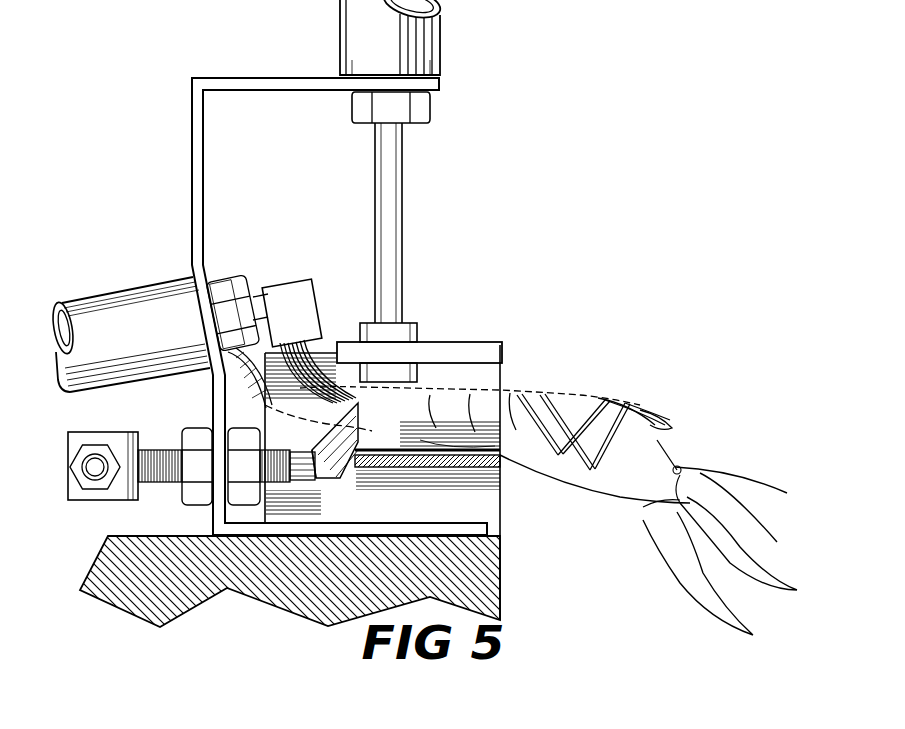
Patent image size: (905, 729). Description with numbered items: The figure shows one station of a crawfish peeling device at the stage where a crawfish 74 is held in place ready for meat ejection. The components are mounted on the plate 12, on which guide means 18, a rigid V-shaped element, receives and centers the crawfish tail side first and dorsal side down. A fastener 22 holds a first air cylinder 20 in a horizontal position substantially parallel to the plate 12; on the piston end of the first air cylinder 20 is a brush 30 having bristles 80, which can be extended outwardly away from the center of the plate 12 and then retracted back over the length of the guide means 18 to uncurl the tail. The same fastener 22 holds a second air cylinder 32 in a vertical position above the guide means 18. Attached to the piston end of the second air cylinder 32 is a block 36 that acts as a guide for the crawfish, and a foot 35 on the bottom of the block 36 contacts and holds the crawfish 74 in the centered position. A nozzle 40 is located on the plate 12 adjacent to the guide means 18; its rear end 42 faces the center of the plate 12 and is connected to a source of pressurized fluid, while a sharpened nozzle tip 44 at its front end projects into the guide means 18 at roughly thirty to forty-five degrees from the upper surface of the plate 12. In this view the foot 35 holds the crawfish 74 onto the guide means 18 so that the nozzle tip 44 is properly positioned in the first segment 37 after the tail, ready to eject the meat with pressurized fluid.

The plate 12 is at (166, 538).
The guide means 18 is at (498, 378).
The first air cylinder 20 is at (128, 300).
The fastener 22 is at (192, 152).
The brush 30 is at (283, 290).
The second air cylinder 32 is at (436, 50).
The foot 35 is at (420, 372).
The block 36 is at (494, 352).
The first segment 37 is at (372, 411).
The nozzle 40 is at (308, 478).
The rear end 42 is at (110, 438).
The nozzle tip 44 is at (336, 468).
The crawfish 74 is at (568, 473).
The bristles 80 is at (318, 346).